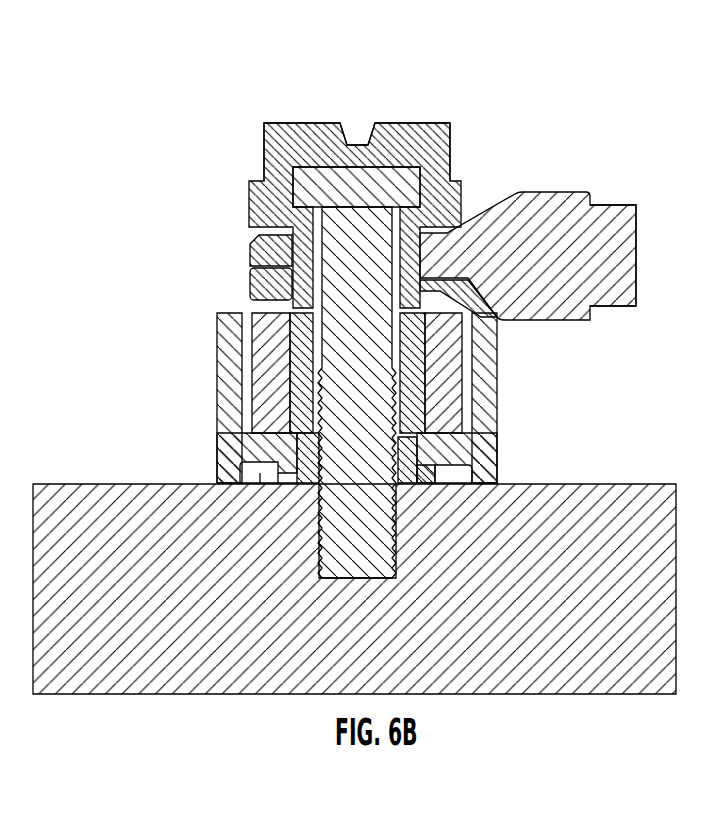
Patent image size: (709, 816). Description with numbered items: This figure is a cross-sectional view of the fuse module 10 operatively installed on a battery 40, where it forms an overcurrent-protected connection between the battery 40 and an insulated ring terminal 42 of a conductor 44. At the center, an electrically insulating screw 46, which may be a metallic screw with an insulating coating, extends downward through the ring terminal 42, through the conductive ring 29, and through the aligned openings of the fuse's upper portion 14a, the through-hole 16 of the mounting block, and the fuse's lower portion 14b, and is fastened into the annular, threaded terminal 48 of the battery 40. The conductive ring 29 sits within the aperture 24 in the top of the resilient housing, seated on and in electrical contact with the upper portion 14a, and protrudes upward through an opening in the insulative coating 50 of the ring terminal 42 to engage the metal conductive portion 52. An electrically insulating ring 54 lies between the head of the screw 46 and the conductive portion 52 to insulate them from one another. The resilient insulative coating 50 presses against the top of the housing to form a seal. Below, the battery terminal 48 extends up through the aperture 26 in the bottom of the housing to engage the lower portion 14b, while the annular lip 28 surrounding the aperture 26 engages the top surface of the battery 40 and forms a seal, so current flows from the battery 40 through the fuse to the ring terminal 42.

The fuse module 10 is at (134, 257).
The upper portion 14a is at (288, 318).
The lower portion 14b is at (300, 425).
The through-hole 16 is at (408, 343).
The aperture 24 is at (308, 390).
The aperture 26 is at (424, 446).
The annular lip 28 is at (437, 469).
The conductive ring 29 is at (492, 322).
The battery 40 is at (97, 484).
The insulated ring terminal 42 is at (556, 207).
The conductor 44 is at (637, 240).
The electrically insulating screw 46 is at (441, 122).
The threaded terminal 48 is at (303, 453).
The insulative coating 50 is at (249, 238).
The conductive portion 52 is at (286, 289).
The electrically insulating ring 54 is at (256, 242).